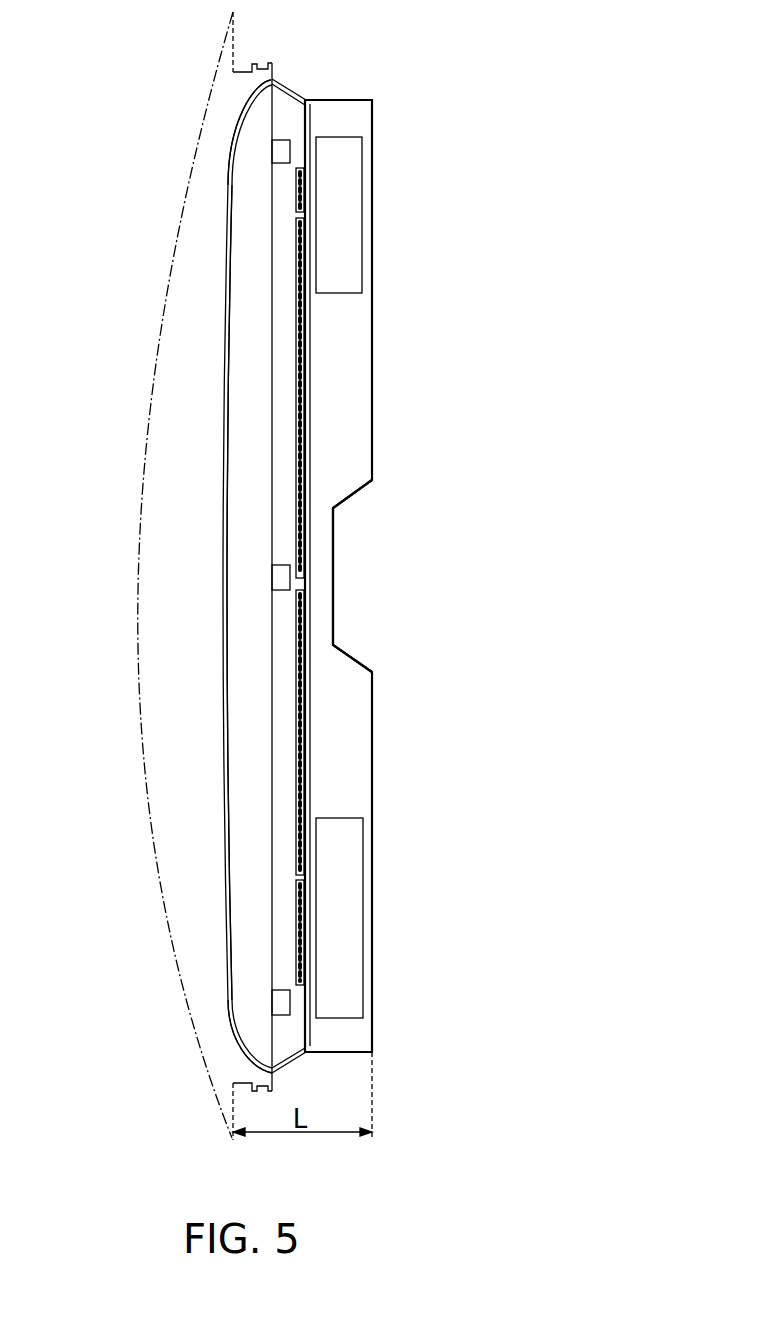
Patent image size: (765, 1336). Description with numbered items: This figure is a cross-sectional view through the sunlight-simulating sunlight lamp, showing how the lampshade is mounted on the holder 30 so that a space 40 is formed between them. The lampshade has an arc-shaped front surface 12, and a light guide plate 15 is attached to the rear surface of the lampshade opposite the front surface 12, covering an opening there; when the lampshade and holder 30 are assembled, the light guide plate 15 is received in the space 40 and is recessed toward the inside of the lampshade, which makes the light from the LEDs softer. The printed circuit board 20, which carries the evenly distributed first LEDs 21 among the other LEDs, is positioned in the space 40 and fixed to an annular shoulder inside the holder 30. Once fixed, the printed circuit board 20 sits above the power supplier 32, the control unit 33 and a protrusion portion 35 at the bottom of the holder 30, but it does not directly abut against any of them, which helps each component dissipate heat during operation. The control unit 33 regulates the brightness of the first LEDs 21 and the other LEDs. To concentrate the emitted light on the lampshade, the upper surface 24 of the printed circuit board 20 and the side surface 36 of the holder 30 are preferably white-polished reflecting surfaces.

The front surface 12 is at (140, 665).
The light guide plate 15 is at (225, 805).
The printed circuit board 20 is at (309, 1030).
The first LEDs 21 is at (303, 933).
The upper surface 24 is at (303, 127).
The holder 30 is at (345, 100).
The power supplier 32 is at (357, 918).
The control unit 33 is at (357, 220).
The protrusion portion 35 is at (337, 578).
The side surface 36 is at (288, 1060).
The space 40 is at (250, 372).